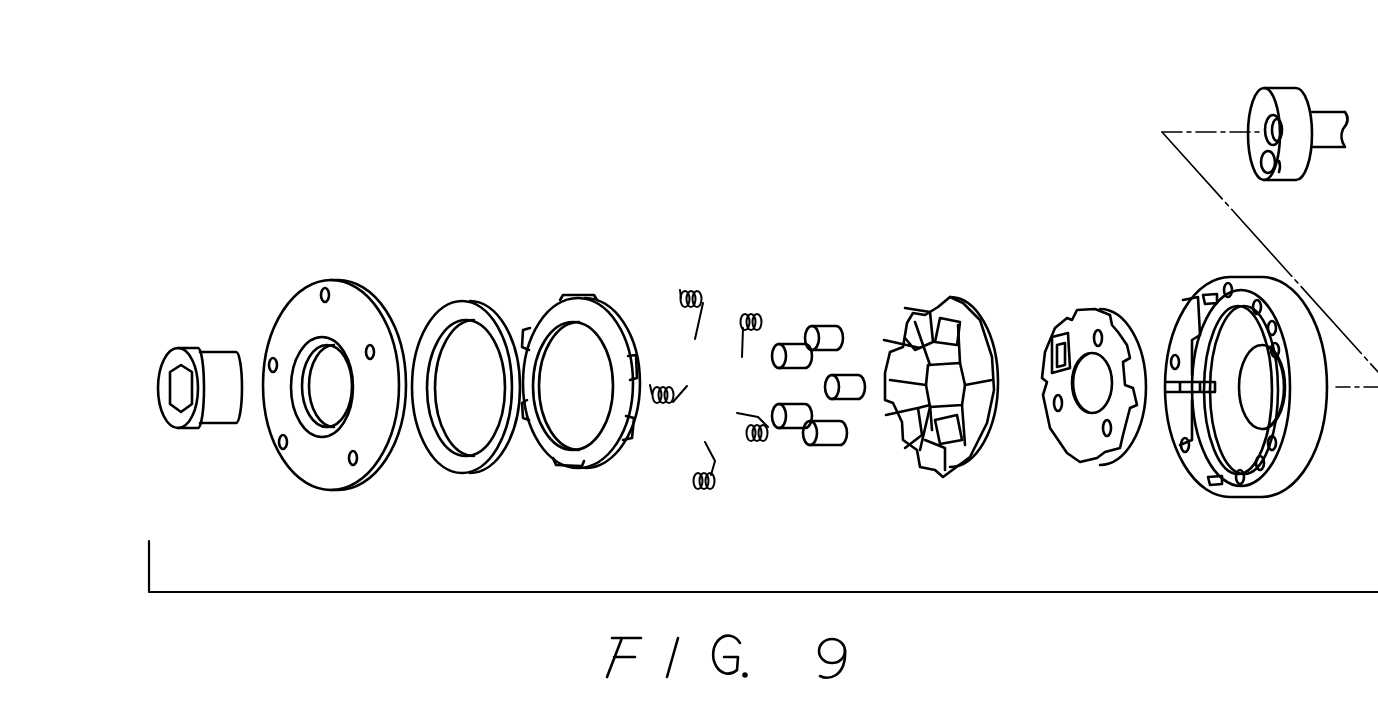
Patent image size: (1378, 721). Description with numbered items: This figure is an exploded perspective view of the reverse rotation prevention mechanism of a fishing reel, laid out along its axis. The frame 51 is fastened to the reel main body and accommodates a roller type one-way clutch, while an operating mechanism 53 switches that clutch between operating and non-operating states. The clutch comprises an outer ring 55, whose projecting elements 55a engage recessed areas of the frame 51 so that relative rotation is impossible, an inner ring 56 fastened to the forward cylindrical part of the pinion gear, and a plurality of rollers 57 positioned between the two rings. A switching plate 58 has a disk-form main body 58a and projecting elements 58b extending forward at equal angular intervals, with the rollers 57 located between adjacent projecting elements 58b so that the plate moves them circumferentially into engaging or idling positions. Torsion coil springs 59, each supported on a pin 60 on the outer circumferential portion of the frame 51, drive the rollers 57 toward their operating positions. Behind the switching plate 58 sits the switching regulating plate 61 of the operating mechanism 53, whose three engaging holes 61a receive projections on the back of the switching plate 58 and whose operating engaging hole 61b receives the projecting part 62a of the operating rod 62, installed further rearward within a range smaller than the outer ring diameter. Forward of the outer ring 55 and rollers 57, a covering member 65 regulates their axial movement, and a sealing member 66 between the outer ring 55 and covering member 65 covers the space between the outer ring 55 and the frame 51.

The frame 51 is at (1253, 389).
The operating mechanism 53 is at (1152, 228).
The outer ring 55 is at (590, 398).
The projecting elements 55a is at (590, 296).
The inner ring 56 is at (224, 357).
The rollers 57 is at (852, 383).
The switching plate 58 is at (961, 371).
The main body 58a is at (960, 325).
The projecting elements 58b is at (940, 350).
The torsion coil springs 59 is at (755, 312).
The pin 60 is at (1205, 298).
The switching regulating plate 61 is at (1081, 389).
The engaging holes 61a is at (1100, 333).
The operating engaging hole 61b is at (1062, 338).
The operating rod 62 is at (1298, 126).
The projecting part 62a is at (1270, 170).
The covering member 65 is at (300, 306).
The sealing member 66 is at (461, 312).